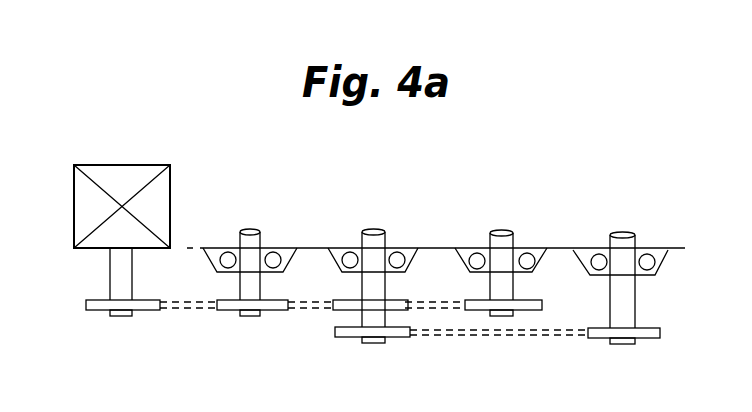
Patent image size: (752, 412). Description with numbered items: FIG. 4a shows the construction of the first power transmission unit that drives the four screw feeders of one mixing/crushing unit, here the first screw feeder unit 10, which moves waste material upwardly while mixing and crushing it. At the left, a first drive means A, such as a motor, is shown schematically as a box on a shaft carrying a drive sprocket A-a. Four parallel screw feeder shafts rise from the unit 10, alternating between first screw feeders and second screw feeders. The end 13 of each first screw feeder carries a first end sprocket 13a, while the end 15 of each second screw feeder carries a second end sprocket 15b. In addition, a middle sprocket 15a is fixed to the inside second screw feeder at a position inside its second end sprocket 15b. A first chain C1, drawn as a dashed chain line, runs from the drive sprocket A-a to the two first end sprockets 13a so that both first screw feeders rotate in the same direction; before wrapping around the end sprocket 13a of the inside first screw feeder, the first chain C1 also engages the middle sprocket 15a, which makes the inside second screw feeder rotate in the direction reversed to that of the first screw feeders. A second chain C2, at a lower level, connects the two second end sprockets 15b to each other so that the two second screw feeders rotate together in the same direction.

The first drive means A is at (170, 184).
The drive sprocket A-a is at (96, 310).
The first screw feeder unit 10 is at (498, 212).
The end of first screw feeder 13 is at (256, 240).
The first end sprocket 13a is at (273, 312).
The end of second screw feeder 15 is at (374, 237).
The middle sprocket 15a is at (334, 306).
The second end sprocket 15b is at (400, 340).
The first chain C1 is at (176, 309).
The second chain C2 is at (494, 338).